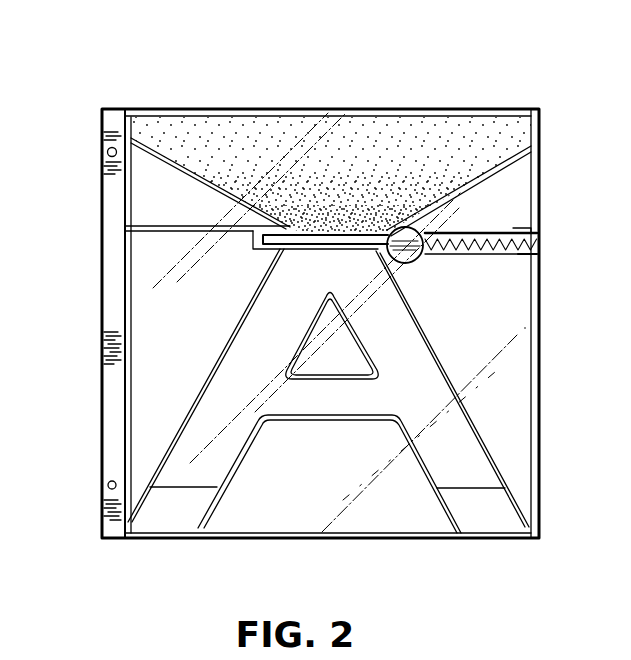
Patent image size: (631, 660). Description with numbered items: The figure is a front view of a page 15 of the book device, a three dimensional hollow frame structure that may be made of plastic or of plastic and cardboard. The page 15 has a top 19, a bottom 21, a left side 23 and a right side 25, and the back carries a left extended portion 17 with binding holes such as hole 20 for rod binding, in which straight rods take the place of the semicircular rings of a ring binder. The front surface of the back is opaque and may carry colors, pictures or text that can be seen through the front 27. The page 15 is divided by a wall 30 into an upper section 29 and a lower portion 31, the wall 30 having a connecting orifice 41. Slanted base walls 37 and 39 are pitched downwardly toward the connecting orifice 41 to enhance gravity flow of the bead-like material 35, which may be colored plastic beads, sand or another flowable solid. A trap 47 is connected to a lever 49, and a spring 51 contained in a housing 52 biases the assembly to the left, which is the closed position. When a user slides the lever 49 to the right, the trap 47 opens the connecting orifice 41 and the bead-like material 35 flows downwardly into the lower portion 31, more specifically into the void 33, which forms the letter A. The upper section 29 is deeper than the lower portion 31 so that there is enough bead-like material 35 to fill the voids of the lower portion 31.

The page 15 is at (272, 98).
The left extended portion 17 is at (104, 318).
The top 19 is at (374, 108).
The hole 20 is at (108, 152).
The bottom 21 is at (271, 540).
The left side 23 is at (120, 372).
The right side 25 is at (539, 455).
The front 27 is at (455, 364).
The upper section 29 is at (188, 148).
The wall 30 is at (167, 233).
The lower portion 31 is at (383, 500).
The void 33 is at (217, 403).
The bead-like material 35 is at (306, 182).
The slanted base wall 37 is at (483, 178).
The slanted base wall 39 is at (190, 176).
The connecting orifice 41 is at (340, 232).
The trap 47 is at (312, 250).
The lever 49 is at (423, 262).
The spring 51 is at (528, 253).
The housing 52 is at (538, 240).